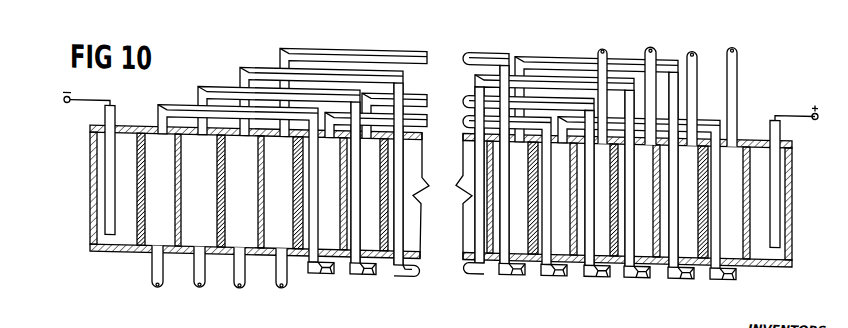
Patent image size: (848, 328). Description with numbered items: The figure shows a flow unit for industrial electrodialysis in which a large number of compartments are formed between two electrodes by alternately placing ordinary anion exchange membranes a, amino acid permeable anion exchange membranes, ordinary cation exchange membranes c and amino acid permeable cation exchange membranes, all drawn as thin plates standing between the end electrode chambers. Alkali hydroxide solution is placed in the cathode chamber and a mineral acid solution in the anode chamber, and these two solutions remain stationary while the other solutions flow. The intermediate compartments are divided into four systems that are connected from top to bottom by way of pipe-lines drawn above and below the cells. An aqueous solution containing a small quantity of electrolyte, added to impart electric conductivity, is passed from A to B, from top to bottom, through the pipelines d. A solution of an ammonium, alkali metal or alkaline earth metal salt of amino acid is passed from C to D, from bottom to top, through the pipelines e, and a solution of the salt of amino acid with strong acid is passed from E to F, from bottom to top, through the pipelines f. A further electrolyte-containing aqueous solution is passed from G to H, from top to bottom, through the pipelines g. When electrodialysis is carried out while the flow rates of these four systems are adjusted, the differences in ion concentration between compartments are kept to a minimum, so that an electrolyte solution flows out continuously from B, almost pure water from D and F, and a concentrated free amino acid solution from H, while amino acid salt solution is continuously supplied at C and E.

The ordinary anion exchange membrane a is at (709, 137).
The ordinary cation exchange membrane c is at (752, 136).
The pipelines d is at (740, 259).
The pipelines e is at (548, 264).
The pipelines f is at (550, 43).
The pipelines g is at (601, 263).
The inlet A is at (732, 0).
The outlet B is at (157, 291).
The inlet C is at (198, 297).
The outlet D is at (603, 5).
The inlet E is at (280, 296).
The outlet F is at (691, 3).
The inlet G is at (650, 0).
The outlet H is at (239, 290).